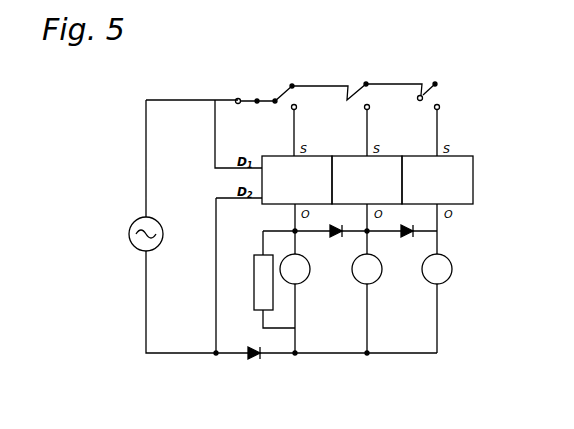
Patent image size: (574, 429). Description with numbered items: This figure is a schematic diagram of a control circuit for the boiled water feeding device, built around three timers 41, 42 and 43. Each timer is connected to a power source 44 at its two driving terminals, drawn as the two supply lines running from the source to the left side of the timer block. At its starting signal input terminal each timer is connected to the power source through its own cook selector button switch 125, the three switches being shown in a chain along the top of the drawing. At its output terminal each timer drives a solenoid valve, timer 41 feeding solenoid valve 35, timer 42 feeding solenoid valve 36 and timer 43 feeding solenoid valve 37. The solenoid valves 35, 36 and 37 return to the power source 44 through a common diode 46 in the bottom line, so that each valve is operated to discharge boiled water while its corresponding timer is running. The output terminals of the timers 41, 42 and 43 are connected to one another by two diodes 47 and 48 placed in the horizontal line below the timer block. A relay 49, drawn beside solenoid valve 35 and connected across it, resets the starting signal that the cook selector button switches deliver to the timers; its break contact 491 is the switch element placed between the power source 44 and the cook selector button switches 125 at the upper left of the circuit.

The break contact 491 is at (247, 95).
The cook selector button switch 125 is at (283, 90).
The timer 41 is at (308, 197).
The timer 42 is at (378, 197).
The timer 43 is at (450, 197).
The power source 44 is at (129, 240).
The solenoid valve 35 is at (306, 289).
The solenoid valve 36 is at (380, 284).
The solenoid valve 37 is at (455, 280).
The diode 47 is at (337, 236).
The diode 48 is at (407, 236).
The relay 49 is at (248, 280).
The common diode 46 is at (253, 362).